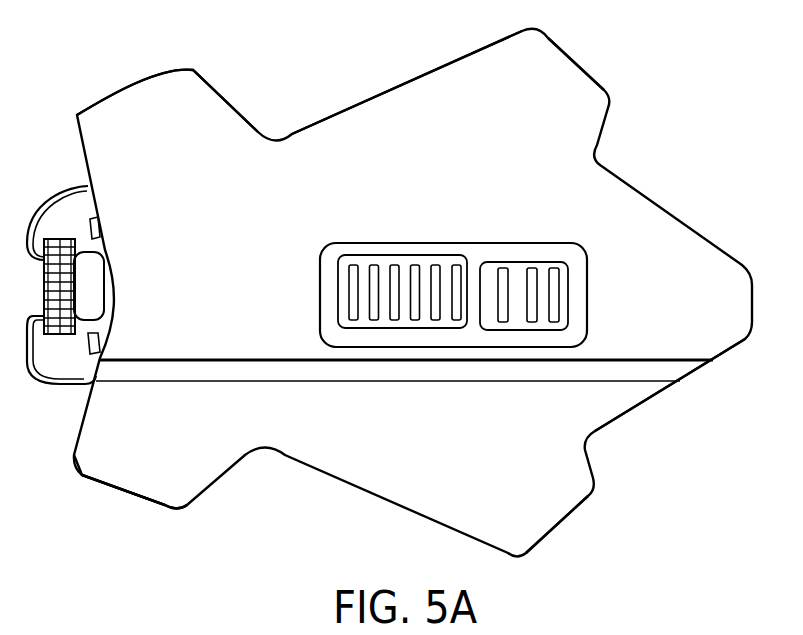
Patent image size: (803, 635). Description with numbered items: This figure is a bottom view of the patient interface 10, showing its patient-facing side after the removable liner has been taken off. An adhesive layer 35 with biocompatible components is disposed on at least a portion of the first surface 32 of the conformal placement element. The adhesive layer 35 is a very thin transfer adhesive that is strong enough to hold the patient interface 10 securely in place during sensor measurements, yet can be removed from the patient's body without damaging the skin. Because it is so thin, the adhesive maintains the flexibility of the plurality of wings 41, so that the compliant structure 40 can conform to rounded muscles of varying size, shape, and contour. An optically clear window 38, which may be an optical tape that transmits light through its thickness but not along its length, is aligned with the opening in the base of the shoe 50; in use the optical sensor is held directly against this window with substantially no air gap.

The patient interface 10 is at (100, 90).
The first surface 32 is at (182, 493).
The adhesive layer 35 is at (350, 124).
The optically clear window 38 is at (553, 258).
The compliant structure 40 is at (656, 408).
The wings 41 is at (191, 88).
The shoe 50 is at (63, 365).